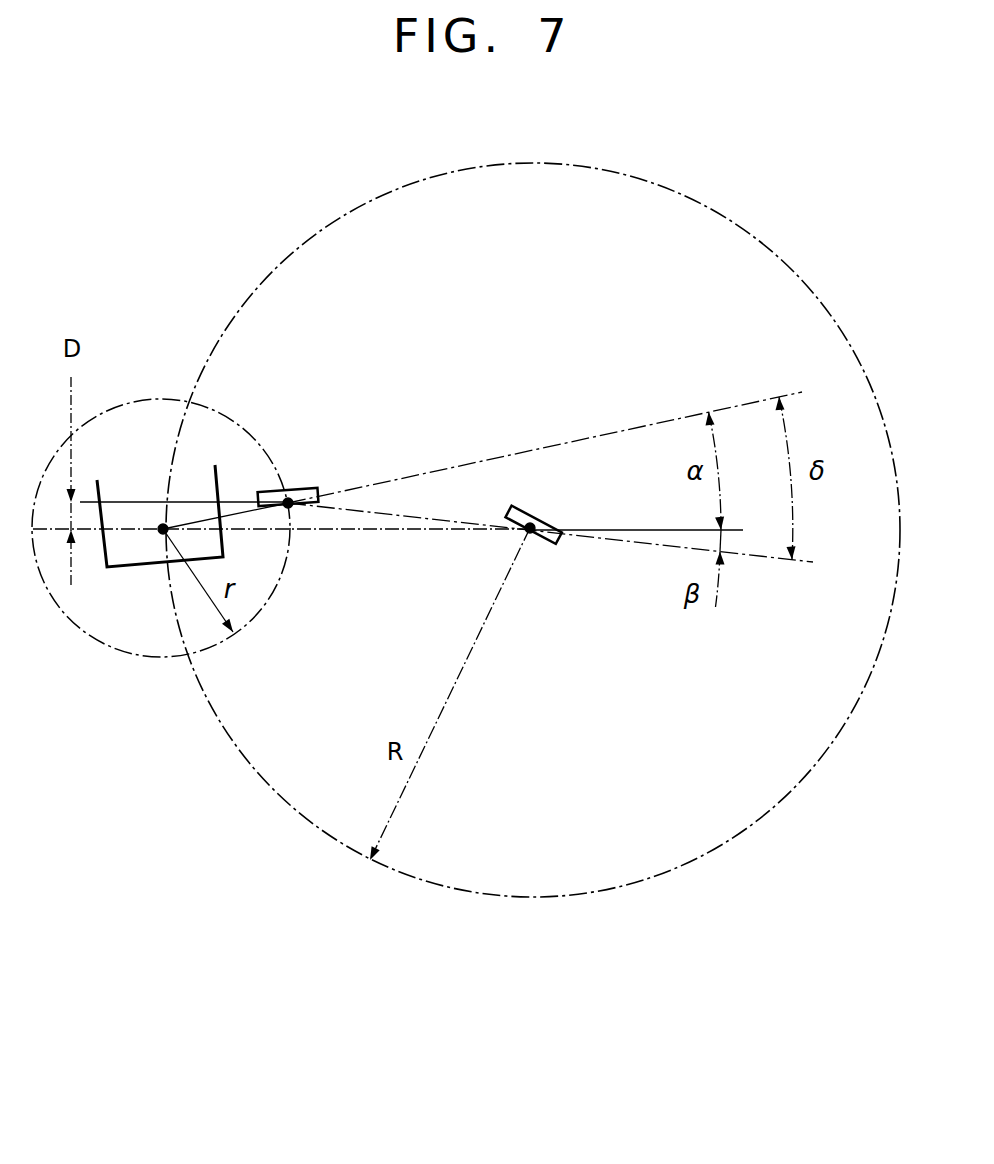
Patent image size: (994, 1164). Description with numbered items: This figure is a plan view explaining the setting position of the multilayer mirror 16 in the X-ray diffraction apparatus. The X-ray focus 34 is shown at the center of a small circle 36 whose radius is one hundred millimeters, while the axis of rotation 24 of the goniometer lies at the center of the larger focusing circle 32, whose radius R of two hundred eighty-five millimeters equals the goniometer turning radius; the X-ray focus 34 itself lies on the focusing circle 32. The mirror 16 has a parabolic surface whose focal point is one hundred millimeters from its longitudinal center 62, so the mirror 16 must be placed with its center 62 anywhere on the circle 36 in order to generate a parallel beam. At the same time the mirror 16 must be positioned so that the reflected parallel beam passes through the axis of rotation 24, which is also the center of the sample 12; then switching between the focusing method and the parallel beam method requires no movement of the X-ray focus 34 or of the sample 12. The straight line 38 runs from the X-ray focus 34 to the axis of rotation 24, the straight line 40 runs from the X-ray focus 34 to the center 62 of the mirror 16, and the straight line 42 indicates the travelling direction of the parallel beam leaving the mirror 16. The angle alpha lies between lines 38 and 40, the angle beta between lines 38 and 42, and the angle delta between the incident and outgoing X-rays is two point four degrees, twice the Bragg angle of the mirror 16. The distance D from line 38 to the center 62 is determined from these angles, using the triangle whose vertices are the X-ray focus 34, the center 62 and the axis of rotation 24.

The sample 12 is at (538, 522).
The multilayer mirror 16 is at (298, 487).
The axis of rotation 24 is at (532, 537).
The focusing circle 32 is at (525, 897).
The X-ray focus 34 is at (158, 533).
The circle 36 is at (238, 423).
The straight line 38 is at (650, 527).
The straight line 40 is at (645, 425).
The straight line 42 is at (752, 557).
The longitudinal center 62 is at (295, 508).